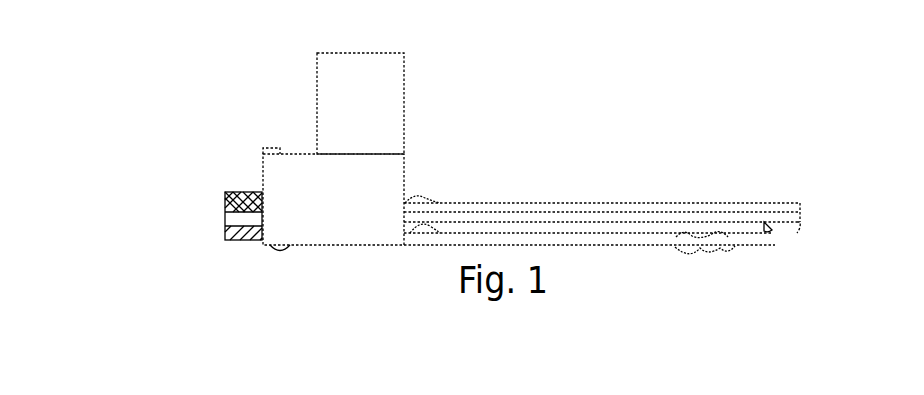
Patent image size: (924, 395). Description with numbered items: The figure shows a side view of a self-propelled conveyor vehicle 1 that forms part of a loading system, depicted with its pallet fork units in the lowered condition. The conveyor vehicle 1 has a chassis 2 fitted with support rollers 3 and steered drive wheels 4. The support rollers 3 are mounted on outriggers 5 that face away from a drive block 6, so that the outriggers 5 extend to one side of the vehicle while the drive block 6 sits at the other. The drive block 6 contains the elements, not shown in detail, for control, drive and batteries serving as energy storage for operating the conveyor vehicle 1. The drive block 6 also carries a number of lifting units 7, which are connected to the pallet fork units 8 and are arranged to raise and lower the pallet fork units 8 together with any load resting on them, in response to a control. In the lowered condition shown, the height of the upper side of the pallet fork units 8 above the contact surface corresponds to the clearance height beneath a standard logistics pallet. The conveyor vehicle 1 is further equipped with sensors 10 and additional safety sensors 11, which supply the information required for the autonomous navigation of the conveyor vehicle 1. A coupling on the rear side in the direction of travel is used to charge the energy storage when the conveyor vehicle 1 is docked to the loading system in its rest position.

The conveyor vehicle 1 is at (497, 112).
The chassis 2 is at (643, 243).
The support rollers 3 is at (690, 247).
The steered drive wheels 4 is at (285, 251).
The outriggers 5 is at (773, 238).
The drive block 6 is at (297, 178).
The lifting units 7 is at (343, 95).
The pallet fork units 8 is at (650, 212).
The sensors 10 is at (270, 146).
The safety sensors 11 is at (228, 200).